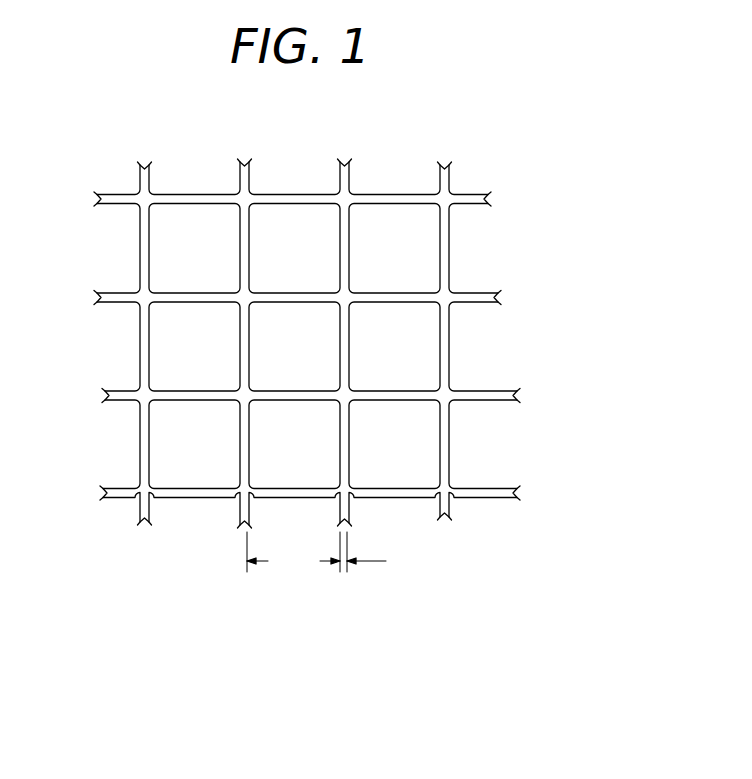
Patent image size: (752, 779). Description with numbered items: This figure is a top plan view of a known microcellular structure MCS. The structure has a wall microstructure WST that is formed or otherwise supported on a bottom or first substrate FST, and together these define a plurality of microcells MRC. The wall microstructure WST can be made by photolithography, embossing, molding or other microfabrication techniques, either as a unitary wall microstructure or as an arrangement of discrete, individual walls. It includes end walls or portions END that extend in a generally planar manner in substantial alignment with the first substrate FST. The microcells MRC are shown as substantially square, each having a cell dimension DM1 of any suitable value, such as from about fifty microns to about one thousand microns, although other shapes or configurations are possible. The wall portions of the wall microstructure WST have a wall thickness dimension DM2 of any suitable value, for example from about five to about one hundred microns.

The first substrate FST is at (296, 250).
The wall microstructure WST is at (240, 277).
The microcells MRC is at (392, 223).
The microcellular structure MCS is at (320, 321).
The end walls or portions END is at (402, 298).
The cell dimension DM1 is at (293, 553).
The wall thickness dimension DM2 is at (390, 553).